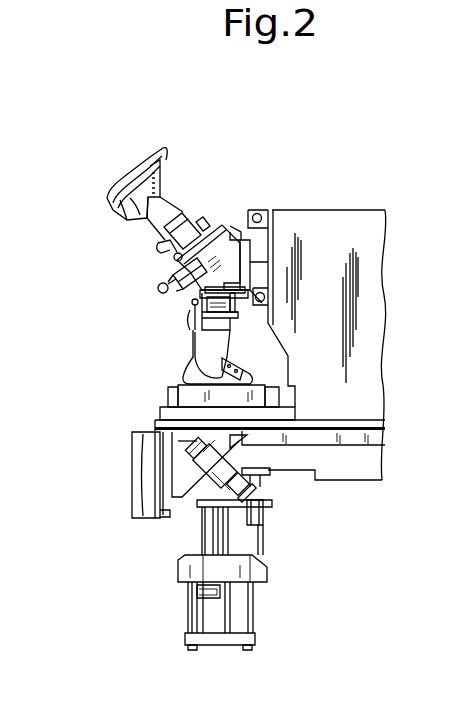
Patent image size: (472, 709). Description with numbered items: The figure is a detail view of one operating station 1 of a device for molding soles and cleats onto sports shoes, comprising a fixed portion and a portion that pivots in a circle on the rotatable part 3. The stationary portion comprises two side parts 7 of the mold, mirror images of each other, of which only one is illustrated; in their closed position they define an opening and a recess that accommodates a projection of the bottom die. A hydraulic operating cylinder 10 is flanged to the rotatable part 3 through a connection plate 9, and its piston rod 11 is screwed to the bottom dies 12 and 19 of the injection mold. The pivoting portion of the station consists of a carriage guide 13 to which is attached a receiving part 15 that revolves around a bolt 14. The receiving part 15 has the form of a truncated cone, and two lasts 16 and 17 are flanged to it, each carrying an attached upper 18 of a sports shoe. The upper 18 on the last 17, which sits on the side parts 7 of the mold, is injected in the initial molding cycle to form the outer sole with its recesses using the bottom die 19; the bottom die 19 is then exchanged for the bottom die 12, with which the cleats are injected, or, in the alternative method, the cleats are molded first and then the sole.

The operating station 1 is at (82, 222).
The rotatable part 3 is at (353, 232).
The side parts of the mold 7 is at (177, 392).
The connection plate 9 is at (183, 487).
The hydraulic operating cylinder 10 is at (212, 595).
The piston rod 11 is at (222, 532).
The bottom die 12 is at (147, 479).
The carriage guide 13 is at (262, 215).
The bolt 14 is at (240, 258).
The receiving part 15 is at (227, 228).
The last 16 is at (158, 227).
The last 17 is at (203, 330).
The upper 18 is at (165, 150).
The bottom die 19 is at (272, 416).